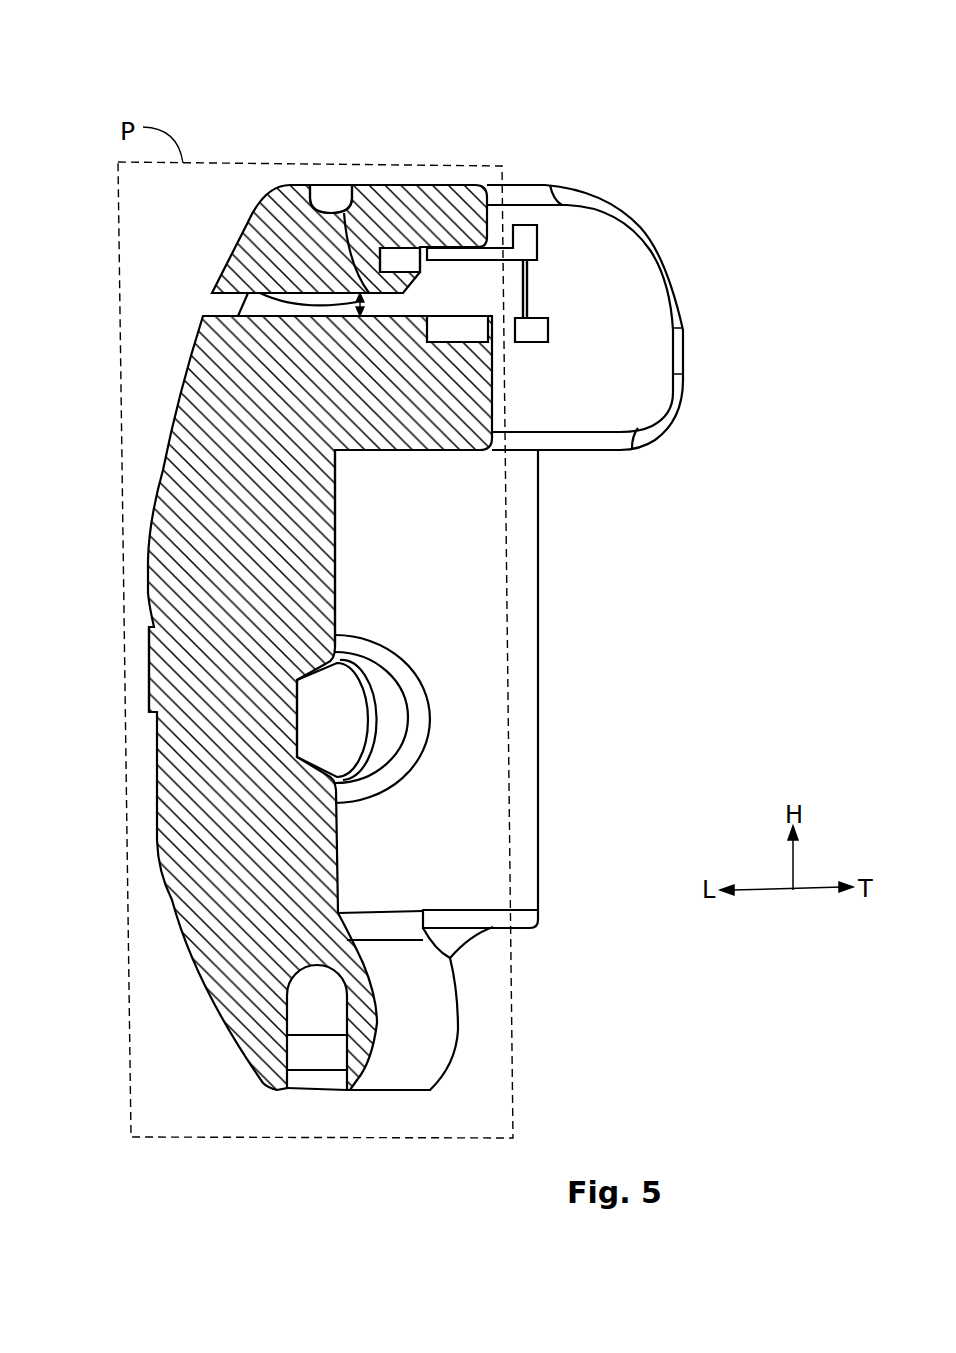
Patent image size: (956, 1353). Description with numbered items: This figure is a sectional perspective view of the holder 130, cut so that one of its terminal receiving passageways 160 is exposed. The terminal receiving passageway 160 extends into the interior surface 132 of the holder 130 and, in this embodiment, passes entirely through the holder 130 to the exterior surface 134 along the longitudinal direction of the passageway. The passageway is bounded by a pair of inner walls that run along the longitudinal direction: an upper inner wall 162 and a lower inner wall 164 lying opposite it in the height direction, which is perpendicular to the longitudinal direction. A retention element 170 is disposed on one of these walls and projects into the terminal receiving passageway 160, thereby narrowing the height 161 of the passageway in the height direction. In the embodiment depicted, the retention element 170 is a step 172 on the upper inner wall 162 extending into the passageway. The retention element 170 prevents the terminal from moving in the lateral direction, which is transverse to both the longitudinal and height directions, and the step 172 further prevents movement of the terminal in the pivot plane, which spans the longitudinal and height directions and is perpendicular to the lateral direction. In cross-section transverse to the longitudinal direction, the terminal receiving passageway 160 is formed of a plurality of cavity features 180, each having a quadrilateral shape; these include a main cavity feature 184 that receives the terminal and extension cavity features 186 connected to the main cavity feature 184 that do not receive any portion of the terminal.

The holder 130 is at (134, 54).
The interior surface 132 is at (658, 395).
The exterior surface 134 is at (148, 670).
The terminal receiving passageway 160 is at (533, 300).
The height 161 is at (300, 292).
The upper inner wall 162 is at (428, 250).
The lower inner wall 164 is at (305, 316).
The retention element 170 is at (342, 184).
The step 172 is at (341, 213).
The cavity feature 180 is at (626, 249).
The main cavity feature 184 is at (511, 284).
The extension cavity feature 186 is at (523, 240).